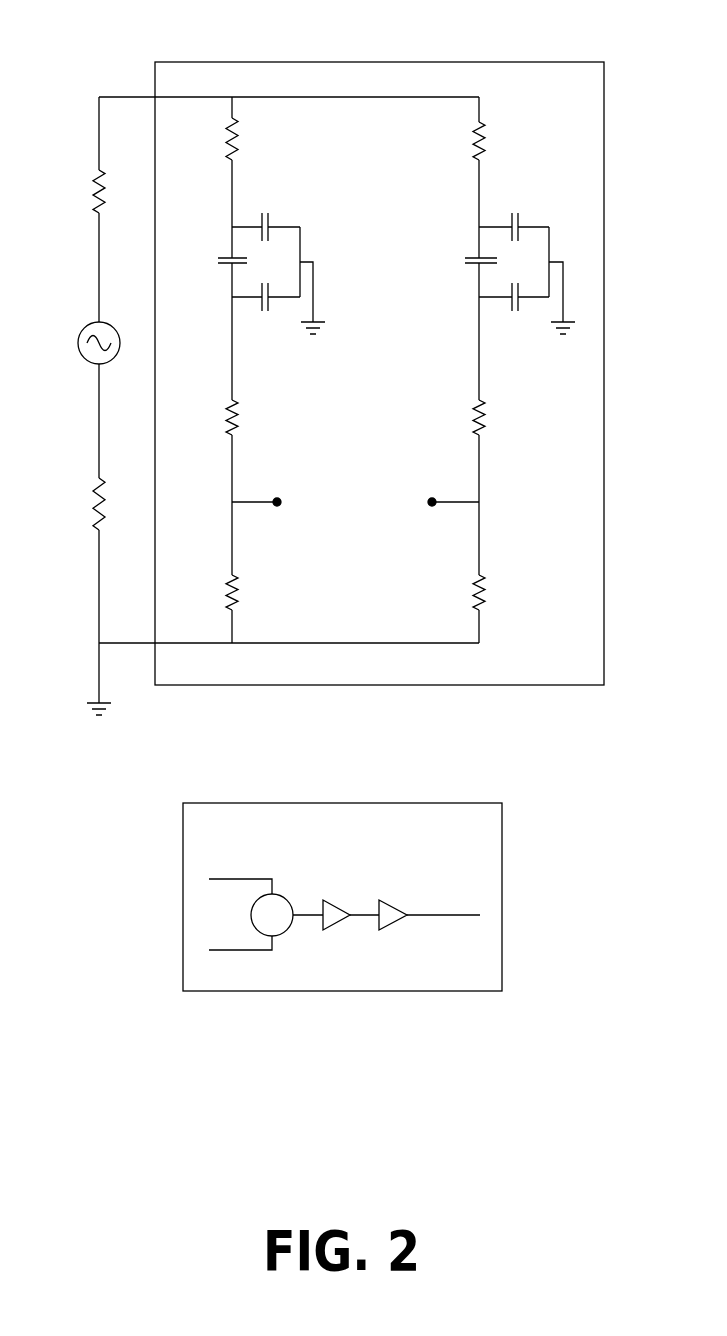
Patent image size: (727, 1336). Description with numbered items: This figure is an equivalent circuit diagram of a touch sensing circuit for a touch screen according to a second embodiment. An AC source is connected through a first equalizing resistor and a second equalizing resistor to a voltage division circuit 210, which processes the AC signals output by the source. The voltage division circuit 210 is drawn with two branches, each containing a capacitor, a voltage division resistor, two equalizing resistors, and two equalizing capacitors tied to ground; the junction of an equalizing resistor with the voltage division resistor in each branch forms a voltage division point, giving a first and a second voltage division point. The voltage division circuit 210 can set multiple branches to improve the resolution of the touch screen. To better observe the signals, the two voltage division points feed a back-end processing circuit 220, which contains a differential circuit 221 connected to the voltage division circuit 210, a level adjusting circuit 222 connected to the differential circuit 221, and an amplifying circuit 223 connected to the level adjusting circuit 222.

The voltage division circuit 210 is at (482, 61).
The back-end processing circuit 220 is at (285, 818).
The differential circuit 221 is at (275, 905).
The level adjusting circuit 222 is at (333, 913).
The amplifying circuit 223 is at (395, 912).